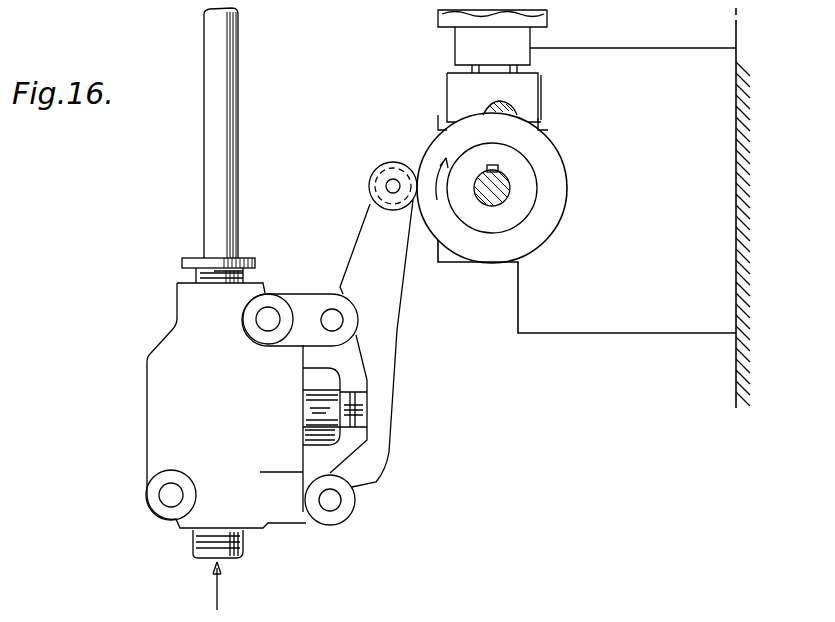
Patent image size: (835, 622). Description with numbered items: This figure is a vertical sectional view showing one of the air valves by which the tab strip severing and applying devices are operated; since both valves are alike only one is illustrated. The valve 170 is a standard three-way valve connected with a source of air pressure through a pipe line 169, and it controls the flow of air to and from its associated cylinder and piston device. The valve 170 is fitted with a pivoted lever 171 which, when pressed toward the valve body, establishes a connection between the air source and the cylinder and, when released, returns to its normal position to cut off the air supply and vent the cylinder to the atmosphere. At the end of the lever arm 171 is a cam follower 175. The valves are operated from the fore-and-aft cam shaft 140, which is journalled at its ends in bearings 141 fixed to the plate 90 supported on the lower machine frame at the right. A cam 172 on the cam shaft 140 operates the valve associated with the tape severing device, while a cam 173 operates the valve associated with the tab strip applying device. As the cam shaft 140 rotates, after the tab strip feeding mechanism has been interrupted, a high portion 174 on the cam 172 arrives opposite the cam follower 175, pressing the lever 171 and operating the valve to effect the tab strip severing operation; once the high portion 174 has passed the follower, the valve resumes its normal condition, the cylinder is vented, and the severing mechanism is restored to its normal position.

The pipe line 169 is at (221, 132).
The valve 170 is at (156, 396).
The pivoted lever 171 is at (358, 246).
The cam follower 175 is at (370, 173).
The cam 173 is at (555, 168).
The cam shaft 140 is at (495, 205).
The cam 172 is at (455, 120).
The high portion 174 is at (512, 106).
The bearings 141 is at (599, 325).
The plate 90 is at (736, 372).